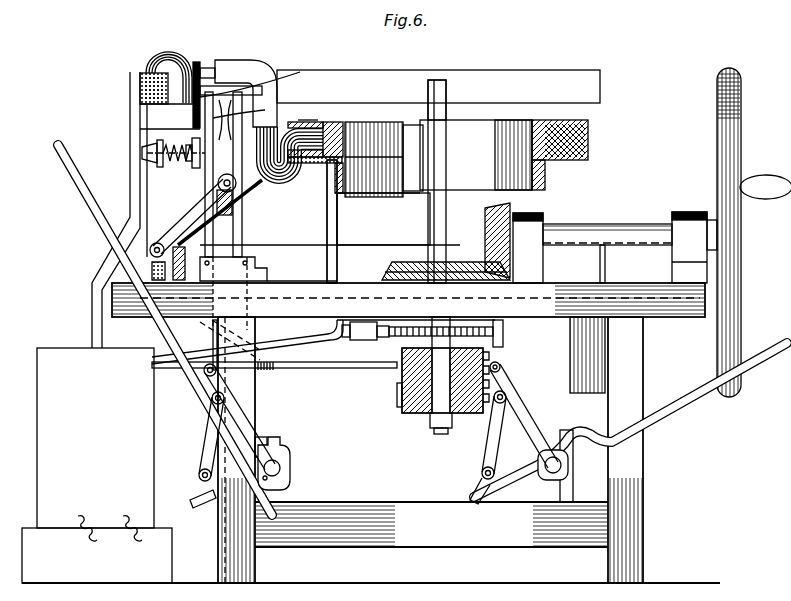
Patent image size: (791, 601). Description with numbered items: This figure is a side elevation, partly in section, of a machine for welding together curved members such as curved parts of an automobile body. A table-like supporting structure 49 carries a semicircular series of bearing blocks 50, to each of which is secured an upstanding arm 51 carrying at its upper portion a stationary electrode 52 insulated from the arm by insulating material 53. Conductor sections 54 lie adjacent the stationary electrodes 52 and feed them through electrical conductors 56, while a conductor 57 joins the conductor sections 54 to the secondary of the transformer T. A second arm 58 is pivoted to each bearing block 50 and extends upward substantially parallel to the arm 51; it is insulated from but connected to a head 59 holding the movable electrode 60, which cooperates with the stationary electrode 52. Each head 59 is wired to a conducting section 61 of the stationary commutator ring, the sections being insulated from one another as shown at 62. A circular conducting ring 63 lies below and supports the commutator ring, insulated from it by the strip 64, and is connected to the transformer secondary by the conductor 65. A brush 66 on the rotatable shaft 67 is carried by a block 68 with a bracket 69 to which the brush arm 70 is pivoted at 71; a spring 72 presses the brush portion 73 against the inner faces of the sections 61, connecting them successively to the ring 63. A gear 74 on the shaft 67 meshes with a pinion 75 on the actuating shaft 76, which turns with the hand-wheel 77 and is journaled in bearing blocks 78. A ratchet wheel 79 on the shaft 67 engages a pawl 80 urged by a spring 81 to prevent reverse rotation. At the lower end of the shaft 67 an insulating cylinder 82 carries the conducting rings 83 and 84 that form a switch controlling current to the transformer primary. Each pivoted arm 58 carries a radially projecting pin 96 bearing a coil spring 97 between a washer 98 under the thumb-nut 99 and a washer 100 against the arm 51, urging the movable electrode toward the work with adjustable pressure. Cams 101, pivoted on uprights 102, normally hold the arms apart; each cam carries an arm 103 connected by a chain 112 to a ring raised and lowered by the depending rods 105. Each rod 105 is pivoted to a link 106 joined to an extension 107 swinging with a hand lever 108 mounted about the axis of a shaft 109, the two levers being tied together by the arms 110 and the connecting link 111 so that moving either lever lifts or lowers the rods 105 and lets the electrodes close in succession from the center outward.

The table-like supporting structure 49 is at (638, 344).
The bearing block 50 is at (245, 269).
The upstanding arm 51 is at (218, 184).
The stationary electrode 52 is at (185, 70).
The insulating material 53 is at (265, 110).
The conductor section 54 is at (140, 92).
The electrical conductor 56 is at (160, 62).
The conductor 57 is at (110, 256).
The second arm 58 is at (243, 228).
The head 59 is at (259, 66).
The electrode 60 is at (212, 72).
The conducting section 61 is at (334, 122).
The insulation 62 is at (588, 132).
The circular conducting ring 63 is at (404, 182).
The strip of insulating material 64 is at (322, 160).
The conductor 65 is at (327, 227).
The brush 66 is at (462, 130).
The rotatable shaft 67 is at (447, 88).
The block 68 is at (406, 135).
The bracket 69 is at (427, 128).
The brush arm 70 is at (476, 155).
The pivot 71 is at (545, 103).
The spring 72 is at (383, 219).
The brush portion 73 is at (588, 120).
The gear 74 is at (406, 262).
The pinion 75 is at (512, 207).
The actuating shaft 76 is at (598, 226).
The hand-wheel 77 is at (719, 129).
The bearing block 78 is at (528, 216).
The ratchet wheel 79 is at (390, 339).
The pawl 80 is at (357, 342).
The spring 81 is at (363, 341).
The insulating cylinder 82 is at (425, 405).
The conducting ring 83 is at (420, 360).
The conducting ring 84 is at (402, 395).
The radially projecting pin 96 is at (220, 163).
The coil spring 97 is at (177, 143).
The washer 98 is at (160, 141).
The thumb-nut 99 is at (196, 166).
The washer 100 is at (190, 170).
The cam 101 is at (247, 188).
The upright 102 is at (233, 213).
The arm 103 is at (171, 230).
The depending rod 105 is at (503, 343).
The link 106 is at (208, 441).
The extension 107 is at (203, 505).
The hand lever 108 is at (93, 205).
The shaft 109 is at (215, 299).
The arm 110 is at (268, 446).
The connecting link 111 is at (302, 368).
The chain 112 is at (152, 266).
The transformer T is at (53, 348).
The motor plate M is at (202, 60).